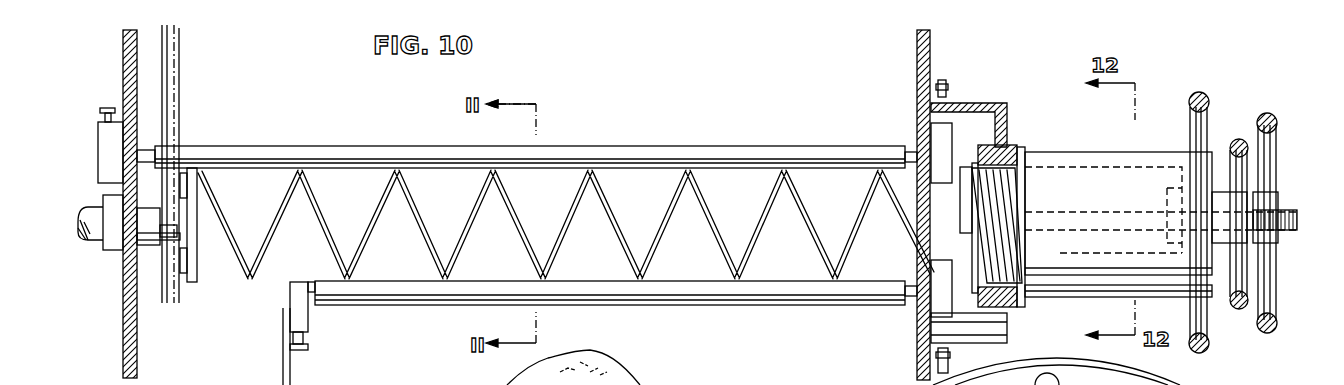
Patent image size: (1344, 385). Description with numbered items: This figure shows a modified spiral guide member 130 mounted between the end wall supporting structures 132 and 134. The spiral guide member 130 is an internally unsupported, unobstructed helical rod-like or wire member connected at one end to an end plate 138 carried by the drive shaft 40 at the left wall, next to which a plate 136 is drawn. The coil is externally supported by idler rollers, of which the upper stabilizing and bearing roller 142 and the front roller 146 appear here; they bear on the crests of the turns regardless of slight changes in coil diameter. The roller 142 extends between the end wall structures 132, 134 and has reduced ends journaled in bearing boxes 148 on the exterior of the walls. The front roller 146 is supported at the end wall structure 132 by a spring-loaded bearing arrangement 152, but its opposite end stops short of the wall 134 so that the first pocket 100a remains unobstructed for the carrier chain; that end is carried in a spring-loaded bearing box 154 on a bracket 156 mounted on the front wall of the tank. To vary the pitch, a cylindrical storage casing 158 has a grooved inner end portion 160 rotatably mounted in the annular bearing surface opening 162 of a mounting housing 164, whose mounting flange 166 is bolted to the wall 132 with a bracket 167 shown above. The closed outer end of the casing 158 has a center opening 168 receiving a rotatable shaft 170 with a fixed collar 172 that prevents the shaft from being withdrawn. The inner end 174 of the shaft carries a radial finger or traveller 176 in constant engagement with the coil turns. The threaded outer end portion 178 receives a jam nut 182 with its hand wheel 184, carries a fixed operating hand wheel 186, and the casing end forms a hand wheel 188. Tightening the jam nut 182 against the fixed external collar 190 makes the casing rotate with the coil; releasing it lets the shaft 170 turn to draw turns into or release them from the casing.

The drive spindle 40 is at (75, 222).
The first or initial pocket 100a is at (203, 268).
The spiral guide member 130 is at (405, 170).
The end wall supporting structure 132 is at (928, 50).
The end wall supporting structure 134 is at (124, 62).
The plate 136 is at (198, 165).
The end plate 138 is at (195, 262).
The stabilizing and bearing roller 142 is at (657, 150).
The front roller 146 is at (698, 290).
The bearing box 148 is at (110, 145).
The spring-loaded bearing arrangement 152 is at (940, 297).
The spring-loaded bearing box 154 is at (310, 313).
The bracket 156 is at (283, 362).
The cylindrical storage casing 158 is at (1076, 152).
The grooved inner end portion 160 is at (1008, 150).
The annular bearing surface opening 162 is at (1005, 275).
The mounting housing 164 is at (985, 323).
The mounting flange 166 is at (950, 87).
The bracket 167 is at (990, 104).
The center opening 168 is at (1180, 253).
The rotatable shaft 170 is at (1062, 212).
The fixed collar 172 is at (1168, 188).
The inner end of the shaft 174 is at (972, 222).
The radial finger or traveller 176 is at (968, 196).
The outer end portion 178 is at (1297, 222).
The jam nut 182 is at (1240, 203).
The hand wheel 184 is at (1239, 138).
The fixed operating hand wheel 186 is at (1276, 118).
The hand wheel 188 is at (1205, 95).
The fixed external collar 190 is at (1218, 232).